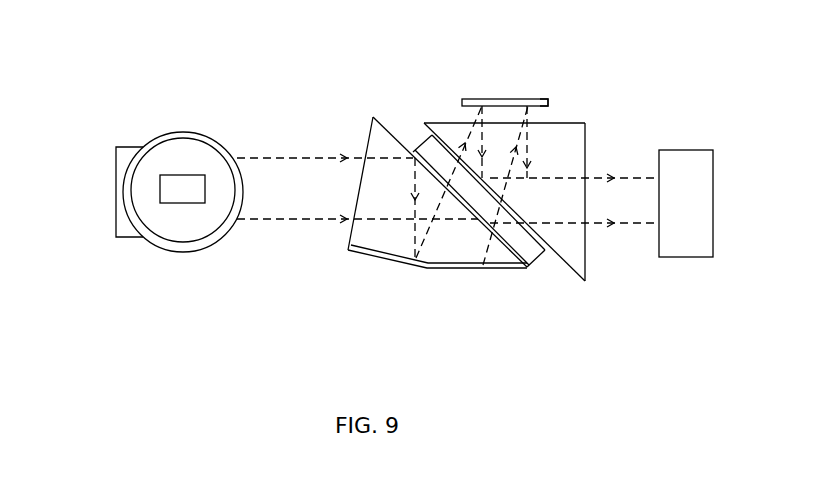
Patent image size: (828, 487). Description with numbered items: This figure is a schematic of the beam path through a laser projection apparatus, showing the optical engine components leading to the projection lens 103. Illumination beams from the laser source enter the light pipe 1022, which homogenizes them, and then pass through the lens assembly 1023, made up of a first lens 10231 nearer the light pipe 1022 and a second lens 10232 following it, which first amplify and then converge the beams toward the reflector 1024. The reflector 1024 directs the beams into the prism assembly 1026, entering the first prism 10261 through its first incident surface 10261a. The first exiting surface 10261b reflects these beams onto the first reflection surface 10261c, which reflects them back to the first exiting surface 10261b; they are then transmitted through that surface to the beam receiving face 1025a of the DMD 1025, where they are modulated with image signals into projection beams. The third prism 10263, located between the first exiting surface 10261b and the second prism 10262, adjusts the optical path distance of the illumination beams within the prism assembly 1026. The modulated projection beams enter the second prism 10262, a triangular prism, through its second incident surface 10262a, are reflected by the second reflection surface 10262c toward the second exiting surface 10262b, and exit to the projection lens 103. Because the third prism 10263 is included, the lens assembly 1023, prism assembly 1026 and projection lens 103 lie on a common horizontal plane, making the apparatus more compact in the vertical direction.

The projection lens 103 is at (692, 258).
The light pipe 1022 is at (191, 206).
The lens assembly 1023 is at (245, 75).
The first lens 10231 is at (214, 145).
The second lens 10232 is at (164, 131).
The reflector 1024 is at (116, 226).
The Digital Micromirror Device (DMD) 1025 is at (477, 99).
The beam receiving face 1025a is at (538, 104).
The prism assembly 1026 is at (458, 341).
The first prism 10261 is at (409, 203).
The first incident surface 10261a is at (368, 131).
The first exiting surface 10261b is at (382, 125).
The first reflection surface 10261c is at (357, 254).
The second prism 10262 is at (563, 185).
The second incident surface 10262a is at (560, 121).
The second exiting surface 10262b is at (586, 141).
The second reflection surface 10262c is at (515, 207).
The third prism 10263 is at (528, 250).